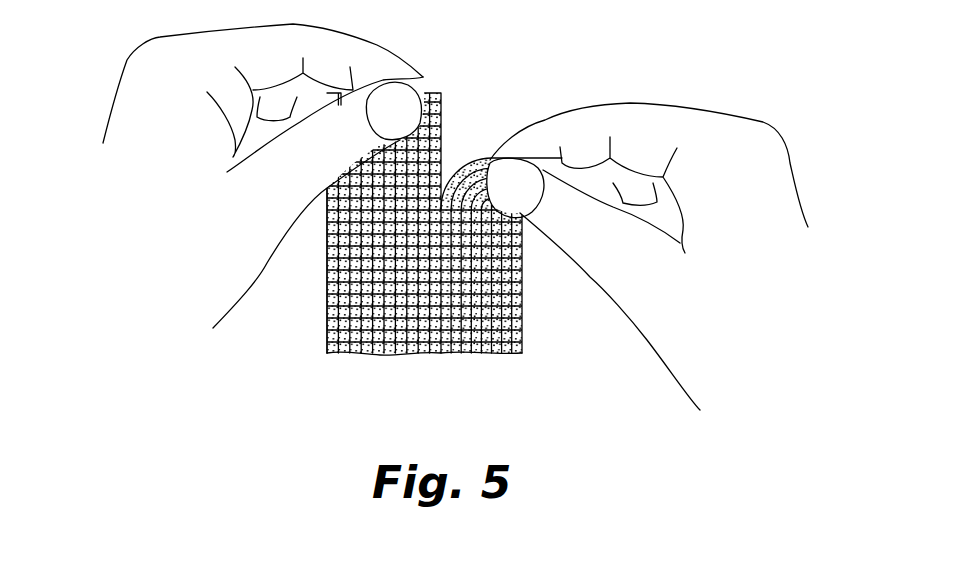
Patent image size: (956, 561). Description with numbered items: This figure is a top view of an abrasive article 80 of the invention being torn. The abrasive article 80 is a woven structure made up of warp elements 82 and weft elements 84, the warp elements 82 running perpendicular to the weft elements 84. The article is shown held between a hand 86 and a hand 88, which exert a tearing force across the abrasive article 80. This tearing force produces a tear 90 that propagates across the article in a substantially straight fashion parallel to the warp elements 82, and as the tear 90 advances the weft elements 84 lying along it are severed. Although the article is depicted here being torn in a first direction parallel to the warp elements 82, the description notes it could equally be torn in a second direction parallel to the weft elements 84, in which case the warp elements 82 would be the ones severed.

The abrasive article 80 is at (417, 242).
The warp elements 82 is at (367, 353).
The weft elements 84 is at (327, 293).
The hand 86 is at (143, 55).
The hand 88 is at (765, 130).
The tear 90 is at (462, 126).